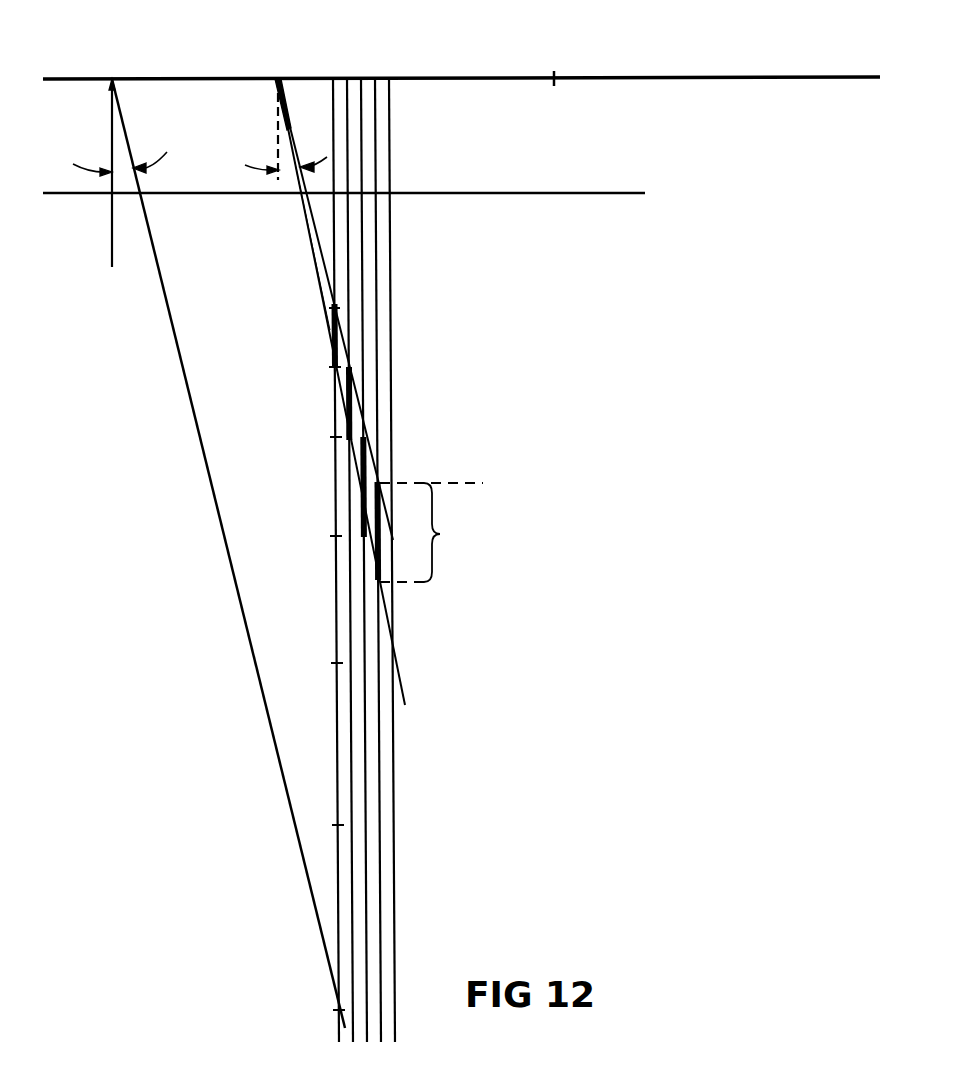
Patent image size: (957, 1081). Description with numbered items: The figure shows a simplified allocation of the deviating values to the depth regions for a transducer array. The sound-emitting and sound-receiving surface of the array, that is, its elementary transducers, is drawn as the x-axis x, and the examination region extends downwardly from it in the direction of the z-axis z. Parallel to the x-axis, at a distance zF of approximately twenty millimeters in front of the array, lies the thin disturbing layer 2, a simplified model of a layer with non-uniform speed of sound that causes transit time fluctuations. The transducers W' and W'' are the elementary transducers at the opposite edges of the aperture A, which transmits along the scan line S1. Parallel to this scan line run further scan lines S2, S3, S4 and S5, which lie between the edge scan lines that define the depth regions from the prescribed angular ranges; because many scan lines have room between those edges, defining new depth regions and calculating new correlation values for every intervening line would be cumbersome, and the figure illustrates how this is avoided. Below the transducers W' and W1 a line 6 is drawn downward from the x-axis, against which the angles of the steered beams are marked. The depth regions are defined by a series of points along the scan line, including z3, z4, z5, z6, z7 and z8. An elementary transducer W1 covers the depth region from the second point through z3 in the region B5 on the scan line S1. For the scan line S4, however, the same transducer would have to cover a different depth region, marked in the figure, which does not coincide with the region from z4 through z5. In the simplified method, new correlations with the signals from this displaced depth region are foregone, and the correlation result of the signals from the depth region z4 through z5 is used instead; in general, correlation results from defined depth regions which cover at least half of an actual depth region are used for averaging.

The thin disturbing layer 2 is at (580, 194).
The transducer axis / normal 6 is at (110, 240).
The elementary transducer W' is at (220, 538).
The elementary transducer W1 is at (333, 376).
The elementary transducer W'' is at (560, 67).
The scan line S1 is at (336, 58).
The scan line S2 is at (347, 68).
The scan line S3 is at (361, 77).
The scan line S4 is at (377, 68).
The scan line S5 is at (389, 103).
The aperture A is at (471, 55).
The region B5 is at (313, 252).
The x-axis x is at (461, 94).
The depth zF is at (392, 193).
The z-axis z is at (442, 486).
The point z3 is at (319, 345).
The point z4 is at (319, 439).
The point z5 is at (321, 538).
The point z6 is at (320, 664).
The point z7 is at (322, 827).
The point z8 is at (324, 1012).